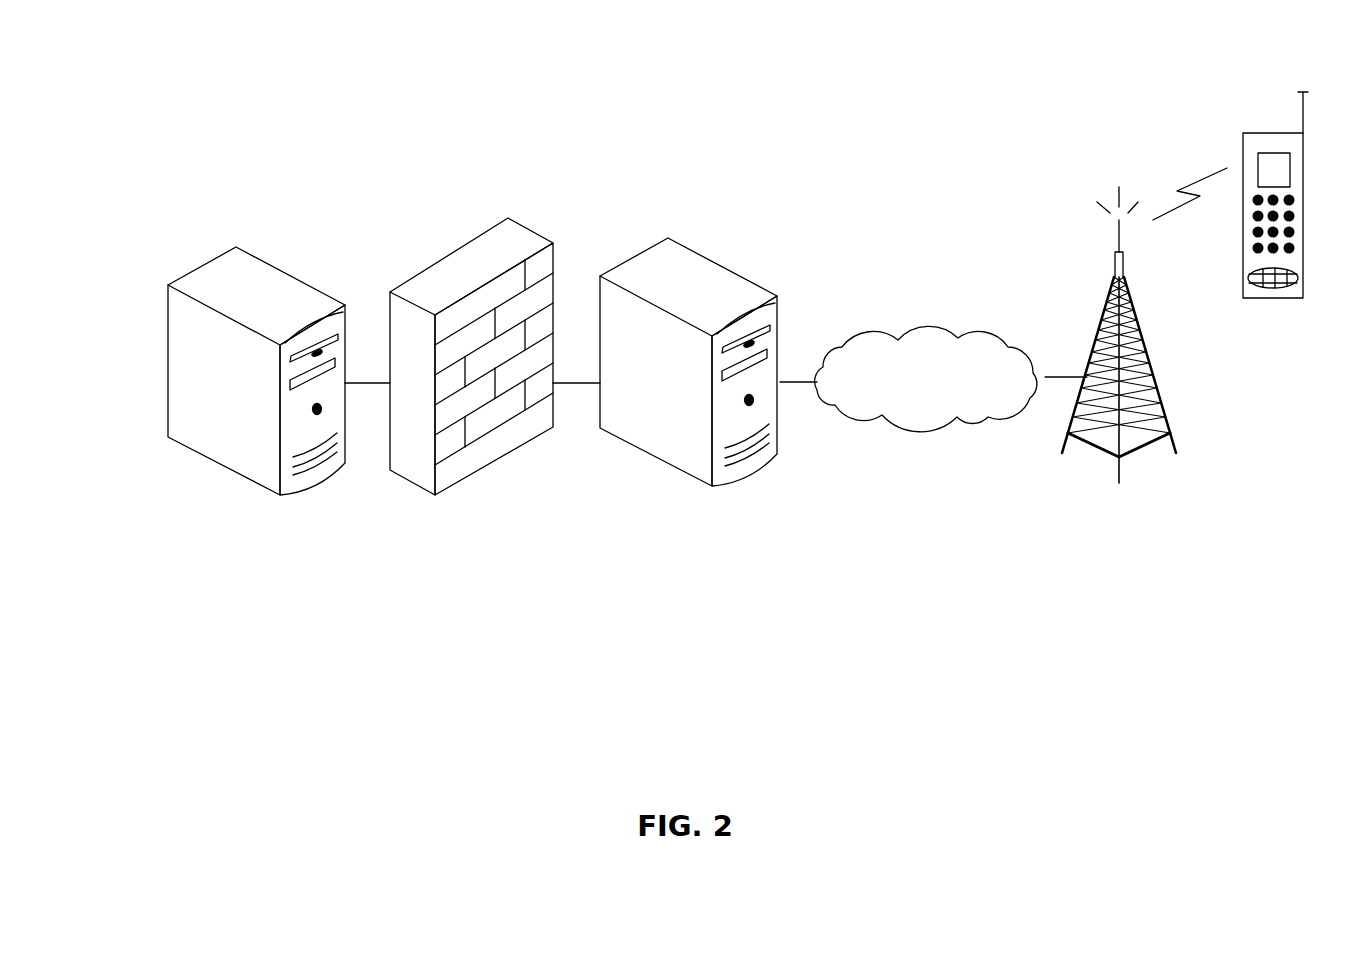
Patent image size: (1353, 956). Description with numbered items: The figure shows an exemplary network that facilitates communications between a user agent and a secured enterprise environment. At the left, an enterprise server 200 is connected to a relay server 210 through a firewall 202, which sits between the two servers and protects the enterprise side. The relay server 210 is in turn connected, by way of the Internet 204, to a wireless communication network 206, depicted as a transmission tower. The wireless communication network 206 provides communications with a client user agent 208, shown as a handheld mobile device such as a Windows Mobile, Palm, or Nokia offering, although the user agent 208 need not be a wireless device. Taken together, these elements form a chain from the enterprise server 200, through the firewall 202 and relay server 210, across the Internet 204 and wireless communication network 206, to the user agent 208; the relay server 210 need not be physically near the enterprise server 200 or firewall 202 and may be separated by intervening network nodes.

The enterprise server 200 is at (320, 490).
The firewall 202 is at (480, 470).
The Internet 204 is at (928, 425).
The wireless communication network 206 is at (1119, 483).
The user agent 208 is at (1272, 300).
The relay server 210 is at (750, 478).